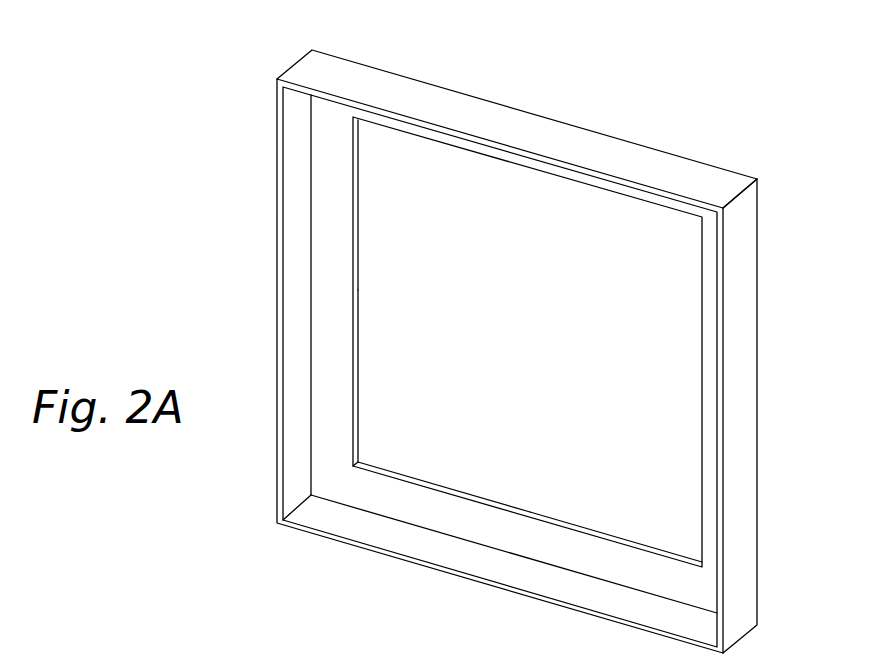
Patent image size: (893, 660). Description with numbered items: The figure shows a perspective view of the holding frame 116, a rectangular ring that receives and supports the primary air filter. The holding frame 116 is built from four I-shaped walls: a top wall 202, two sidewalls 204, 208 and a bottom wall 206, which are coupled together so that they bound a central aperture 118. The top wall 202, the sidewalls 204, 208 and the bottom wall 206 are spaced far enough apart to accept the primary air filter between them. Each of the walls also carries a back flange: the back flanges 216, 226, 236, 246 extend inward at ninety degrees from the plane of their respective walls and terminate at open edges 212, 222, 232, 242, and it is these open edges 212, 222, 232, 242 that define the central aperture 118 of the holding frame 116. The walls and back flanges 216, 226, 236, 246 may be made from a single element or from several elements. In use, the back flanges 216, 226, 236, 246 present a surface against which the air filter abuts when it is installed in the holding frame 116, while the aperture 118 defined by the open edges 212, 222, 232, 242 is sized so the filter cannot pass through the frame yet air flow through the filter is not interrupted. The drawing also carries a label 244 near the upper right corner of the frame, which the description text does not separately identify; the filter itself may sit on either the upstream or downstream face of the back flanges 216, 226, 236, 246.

The holding frame 116 is at (210, 45).
The central aperture 118 is at (388, 312).
The top wall 202 is at (544, 132).
The sidewall 204 is at (747, 400).
The bottom wall 206 is at (480, 583).
The sidewall 208 is at (277, 173).
The open edge 212 is at (618, 195).
The back flange 216 is at (482, 150).
The open edge 222 is at (702, 323).
The back flange 226 is at (707, 442).
The open edge 232 is at (440, 488).
The back flange 236 is at (542, 528).
The open edge 242 is at (355, 368).
The corner 244 is at (773, 197).
The back flange 246 is at (348, 240).